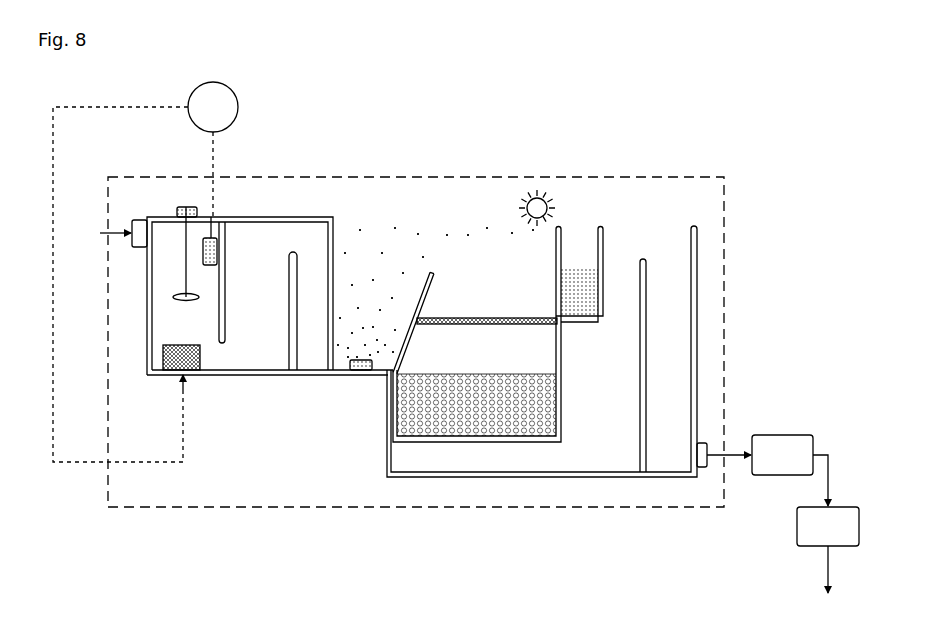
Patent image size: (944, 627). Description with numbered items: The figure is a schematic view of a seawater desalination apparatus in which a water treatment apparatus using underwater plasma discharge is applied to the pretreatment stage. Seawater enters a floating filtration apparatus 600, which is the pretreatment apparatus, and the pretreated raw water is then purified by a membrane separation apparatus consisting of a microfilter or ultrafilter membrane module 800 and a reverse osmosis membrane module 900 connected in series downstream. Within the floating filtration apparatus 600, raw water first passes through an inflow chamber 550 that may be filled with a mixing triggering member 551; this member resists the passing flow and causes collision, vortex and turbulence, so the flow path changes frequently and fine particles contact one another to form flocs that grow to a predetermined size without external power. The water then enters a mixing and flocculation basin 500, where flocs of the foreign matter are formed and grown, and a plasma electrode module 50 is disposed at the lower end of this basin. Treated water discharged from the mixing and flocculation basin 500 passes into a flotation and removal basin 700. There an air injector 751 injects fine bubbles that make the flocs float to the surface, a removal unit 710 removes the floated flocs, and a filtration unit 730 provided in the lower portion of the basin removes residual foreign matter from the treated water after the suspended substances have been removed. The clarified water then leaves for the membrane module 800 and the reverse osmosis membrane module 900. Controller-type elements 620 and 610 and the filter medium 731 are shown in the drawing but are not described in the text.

The plasma electrode module 50 is at (203, 358).
The mixing and flocculation basin 500 is at (183, 313).
The inflow chamber 550 is at (139, 251).
The mixing triggering member 551 is at (137, 218).
The floating filtration apparatus 600 is at (617, 508).
The sensor 610 is at (219, 250).
The controller 620 is at (145, 272).
The flotation and removal basin 700 is at (335, 358).
The removal unit 710 is at (542, 195).
The filtration unit 730 is at (566, 322).
The filter medium 731 is at (483, 427).
The air injector 751 is at (358, 373).
The microfilter or ultrafilter membrane module 800 is at (760, 455).
The reverse osmosis membrane module 900 is at (828, 524).